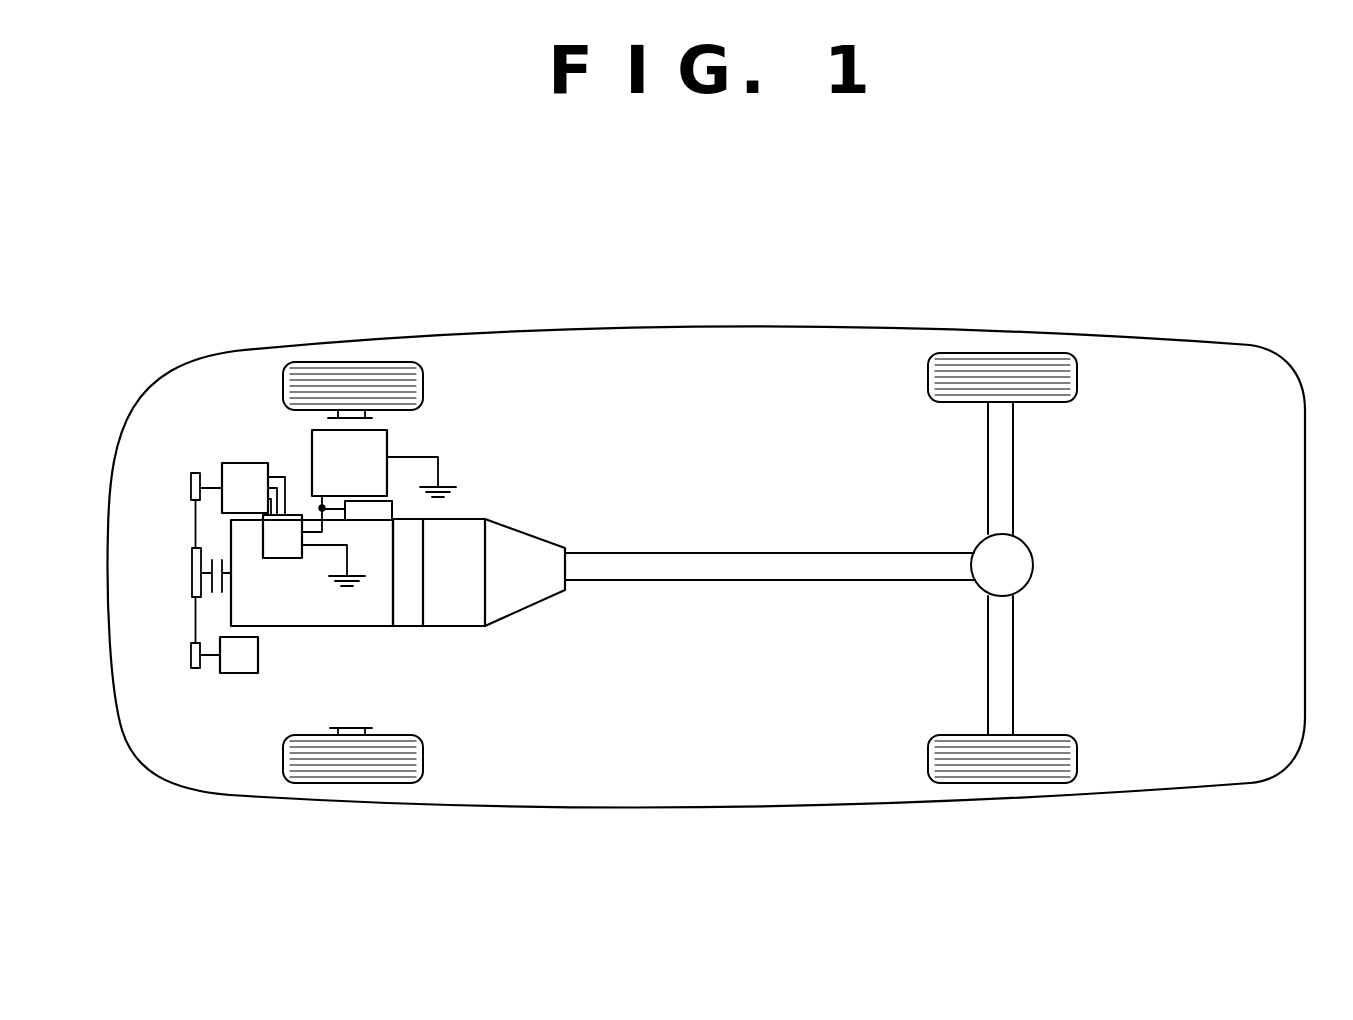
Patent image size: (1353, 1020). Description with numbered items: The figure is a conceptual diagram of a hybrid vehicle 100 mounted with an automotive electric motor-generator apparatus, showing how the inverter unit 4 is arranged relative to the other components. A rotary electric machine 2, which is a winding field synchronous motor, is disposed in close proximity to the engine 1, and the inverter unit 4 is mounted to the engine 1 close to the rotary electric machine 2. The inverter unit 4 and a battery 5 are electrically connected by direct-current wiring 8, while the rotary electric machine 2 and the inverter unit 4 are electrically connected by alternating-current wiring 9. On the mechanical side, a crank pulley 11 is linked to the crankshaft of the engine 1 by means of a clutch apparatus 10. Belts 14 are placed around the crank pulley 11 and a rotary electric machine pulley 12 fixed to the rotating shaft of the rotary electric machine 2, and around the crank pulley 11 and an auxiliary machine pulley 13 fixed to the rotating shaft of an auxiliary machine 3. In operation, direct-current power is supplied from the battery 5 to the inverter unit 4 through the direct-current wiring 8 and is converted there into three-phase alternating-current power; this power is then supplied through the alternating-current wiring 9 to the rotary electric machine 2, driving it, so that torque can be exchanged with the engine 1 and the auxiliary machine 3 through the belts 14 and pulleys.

The hybrid vehicle 100 is at (1212, 305).
The engine 1 is at (365, 607).
The rotary electric machine 2 is at (238, 468).
The auxiliary machine 3 is at (237, 670).
The inverter unit 4 is at (283, 568).
The battery 5 is at (393, 438).
The direct-current wiring 8 is at (330, 528).
The alternating-current wiring 9 is at (284, 471).
The clutch apparatus 10 is at (215, 598).
The crank pulley 11 is at (192, 573).
The rotary electric machine pulley 12 is at (188, 485).
The auxiliary machine pulley 13 is at (182, 658).
The belts 14 is at (190, 527).